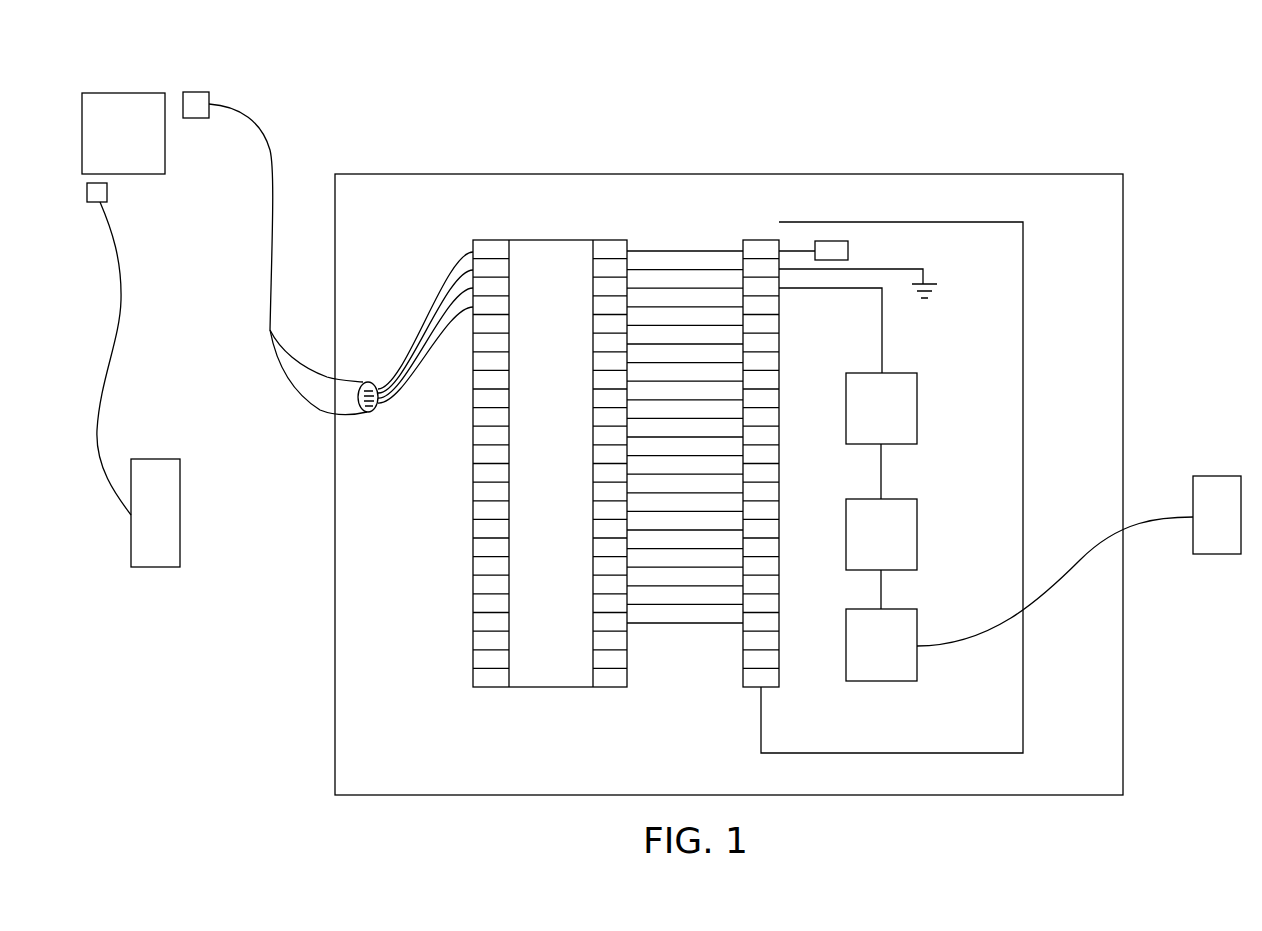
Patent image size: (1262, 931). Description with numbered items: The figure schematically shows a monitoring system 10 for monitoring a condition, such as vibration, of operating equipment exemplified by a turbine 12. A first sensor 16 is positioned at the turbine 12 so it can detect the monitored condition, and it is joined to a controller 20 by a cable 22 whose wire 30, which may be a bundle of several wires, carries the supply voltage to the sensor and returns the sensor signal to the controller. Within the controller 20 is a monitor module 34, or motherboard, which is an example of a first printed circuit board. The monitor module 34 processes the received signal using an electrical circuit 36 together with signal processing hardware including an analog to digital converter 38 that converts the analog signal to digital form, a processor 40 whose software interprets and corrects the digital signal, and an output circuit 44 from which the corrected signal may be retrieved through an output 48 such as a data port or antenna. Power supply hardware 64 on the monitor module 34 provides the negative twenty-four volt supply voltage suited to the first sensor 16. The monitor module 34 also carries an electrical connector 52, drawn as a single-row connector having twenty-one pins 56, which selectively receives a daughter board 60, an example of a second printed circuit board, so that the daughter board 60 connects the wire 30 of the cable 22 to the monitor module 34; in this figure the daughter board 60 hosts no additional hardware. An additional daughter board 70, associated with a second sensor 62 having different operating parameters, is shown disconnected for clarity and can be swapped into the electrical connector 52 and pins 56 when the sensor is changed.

The monitoring system 10 is at (1193, 120).
The turbine 12 is at (138, 174).
The first sensor 16 is at (196, 118).
The controller 20 is at (713, 173).
The cable 22 is at (263, 125).
The wire 30 is at (414, 360).
The monitor module 34 is at (1023, 277).
The electrical circuit 36 is at (882, 326).
The analog to digital converter 38 is at (917, 405).
The processor 40 is at (917, 532).
The output circuit 44 is at (883, 681).
The output 48 is at (1213, 476).
The electrical connector 52 is at (760, 240).
The pins 56 is at (683, 248).
The daughter board 60 is at (550, 687).
The second sensor 62 is at (93, 202).
The power supply hardware 64 is at (848, 251).
The additional daughter board 70 is at (180, 512).